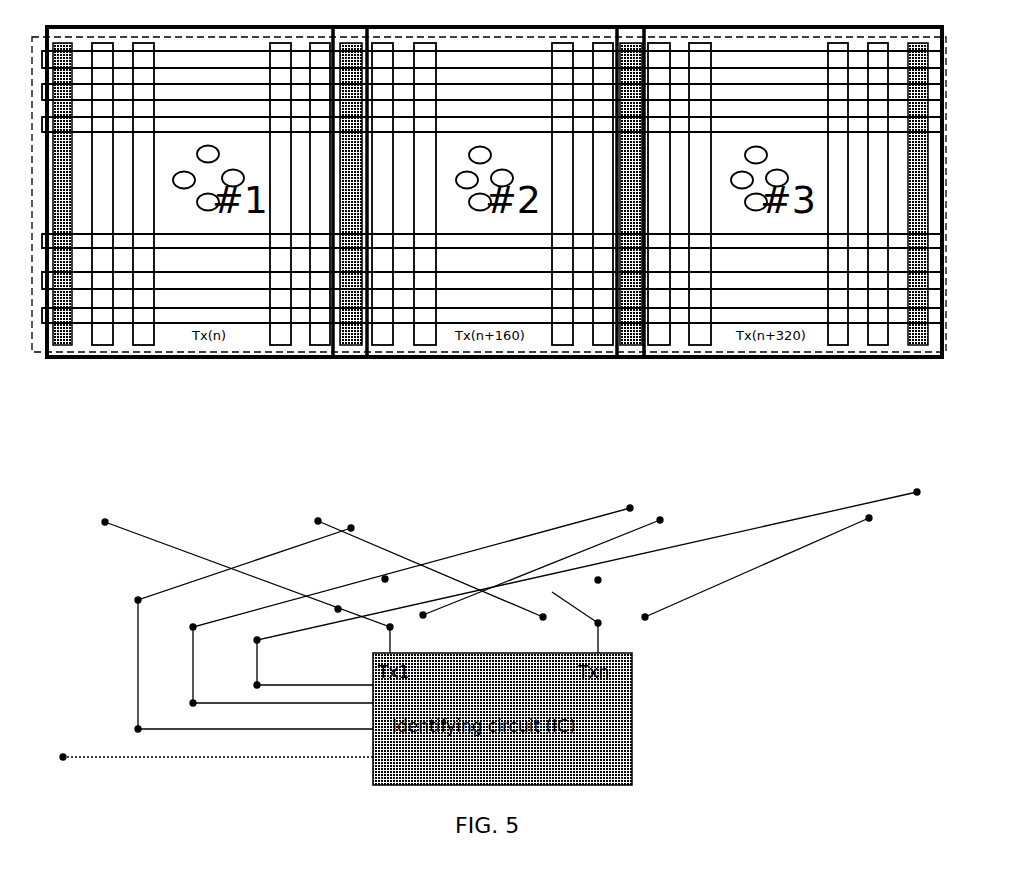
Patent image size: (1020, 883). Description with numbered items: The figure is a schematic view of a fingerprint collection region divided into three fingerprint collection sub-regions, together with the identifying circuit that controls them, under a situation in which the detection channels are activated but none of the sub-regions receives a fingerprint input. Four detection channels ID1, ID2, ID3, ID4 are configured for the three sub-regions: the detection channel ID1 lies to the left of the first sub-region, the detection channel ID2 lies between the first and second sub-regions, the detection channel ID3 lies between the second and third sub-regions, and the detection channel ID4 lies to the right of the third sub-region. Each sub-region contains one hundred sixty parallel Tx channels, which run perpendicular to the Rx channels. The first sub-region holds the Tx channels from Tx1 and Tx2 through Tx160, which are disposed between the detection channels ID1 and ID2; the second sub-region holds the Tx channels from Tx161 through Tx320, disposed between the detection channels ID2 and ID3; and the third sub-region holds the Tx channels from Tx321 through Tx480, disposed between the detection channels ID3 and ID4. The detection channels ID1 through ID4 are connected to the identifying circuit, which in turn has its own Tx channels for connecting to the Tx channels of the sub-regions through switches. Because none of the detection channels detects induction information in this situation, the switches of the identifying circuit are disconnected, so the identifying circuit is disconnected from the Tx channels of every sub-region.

The detection channel ID1 is at (63, 757).
The detection channel ID2 is at (351, 528).
The detection channel ID3 is at (630, 508).
The detection channel ID4 is at (917, 492).
The Tx channel Tx1 is at (105, 522).
The Tx channel Tx2 is at (143, 213).
The Tx channel Tx160 is at (318, 521).
The Tx channel Tx161 is at (385, 579).
The Tx channel Tx320 is at (598, 580).
The Tx channel Tx321 is at (660, 520).
The Tx channel Tx480 is at (869, 518).